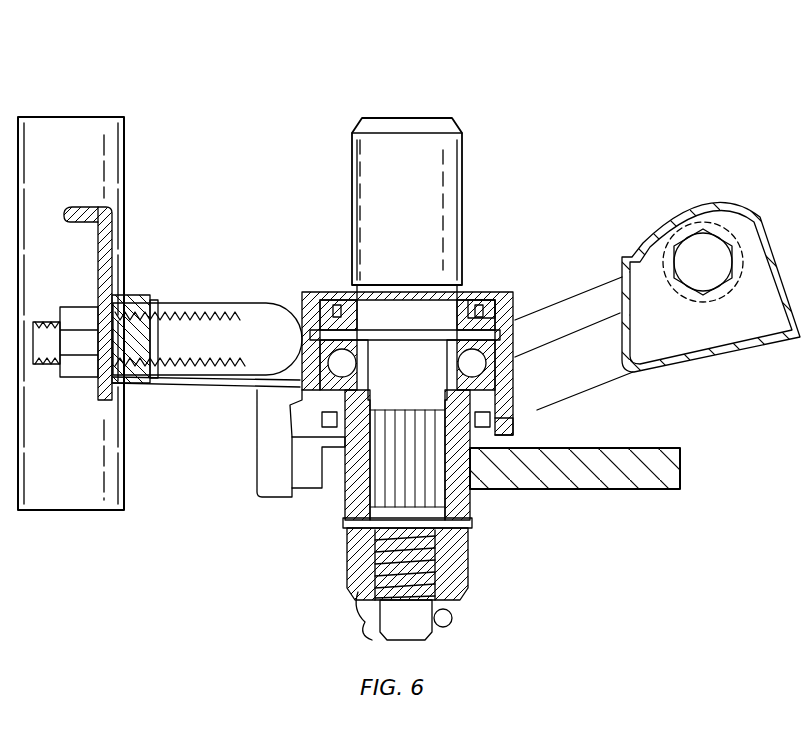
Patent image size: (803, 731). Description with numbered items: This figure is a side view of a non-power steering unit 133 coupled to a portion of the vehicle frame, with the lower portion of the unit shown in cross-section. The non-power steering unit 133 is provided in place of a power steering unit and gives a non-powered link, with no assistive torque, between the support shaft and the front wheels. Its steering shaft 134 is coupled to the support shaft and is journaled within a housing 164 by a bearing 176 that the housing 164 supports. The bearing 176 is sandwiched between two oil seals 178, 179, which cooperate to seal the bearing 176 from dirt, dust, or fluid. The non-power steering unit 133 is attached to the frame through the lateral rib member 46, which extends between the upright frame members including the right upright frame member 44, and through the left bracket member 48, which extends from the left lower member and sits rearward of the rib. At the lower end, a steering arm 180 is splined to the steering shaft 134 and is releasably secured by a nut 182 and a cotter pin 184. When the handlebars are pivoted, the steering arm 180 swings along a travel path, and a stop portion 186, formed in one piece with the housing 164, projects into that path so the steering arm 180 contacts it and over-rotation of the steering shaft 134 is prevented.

The non-power steering unit 133 is at (537, 63).
The steering shaft 134 is at (407, 113).
The right upright frame member 44 is at (72, 497).
The lateral rib member 46 is at (84, 204).
The left bracket member 48 is at (682, 342).
The housing 164 is at (512, 280).
The bearing 176 is at (293, 392).
The oil seal 178 is at (503, 442).
The oil seal 179 is at (481, 292).
The steering arm 180 is at (634, 492).
The nut 182 is at (462, 566).
The cotter pin 184 is at (454, 622).
The stop portion 186 is at (260, 467).